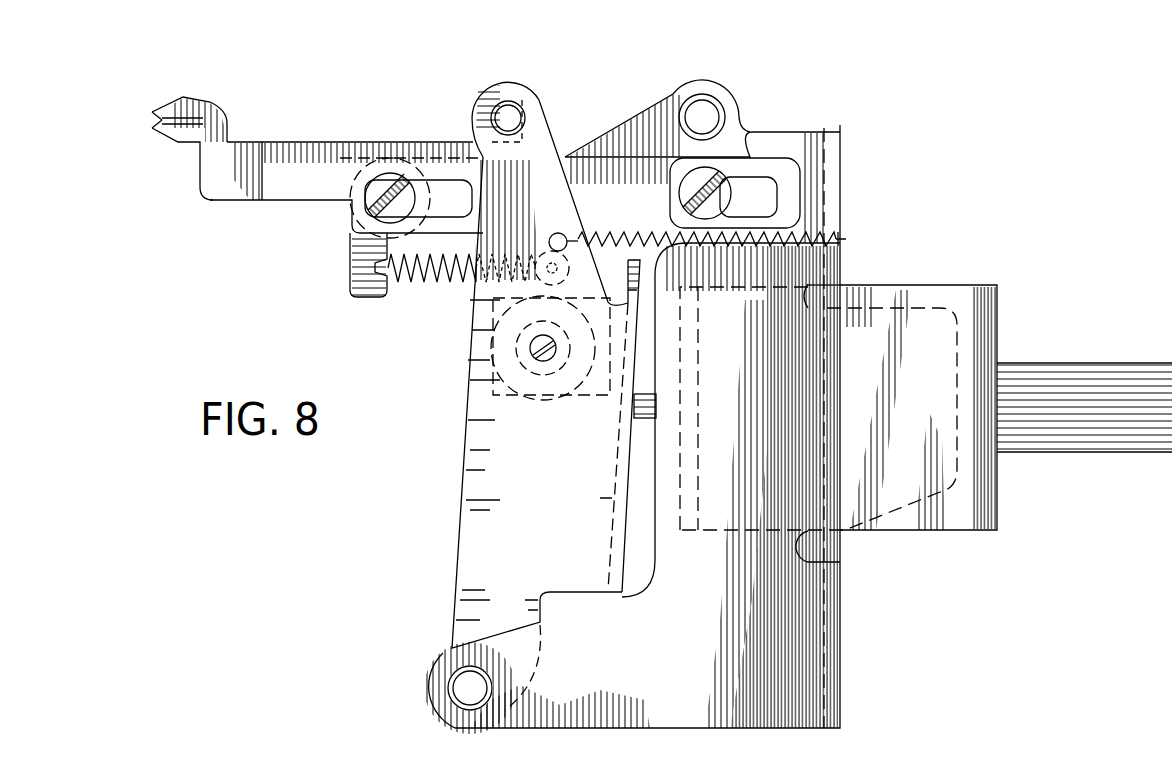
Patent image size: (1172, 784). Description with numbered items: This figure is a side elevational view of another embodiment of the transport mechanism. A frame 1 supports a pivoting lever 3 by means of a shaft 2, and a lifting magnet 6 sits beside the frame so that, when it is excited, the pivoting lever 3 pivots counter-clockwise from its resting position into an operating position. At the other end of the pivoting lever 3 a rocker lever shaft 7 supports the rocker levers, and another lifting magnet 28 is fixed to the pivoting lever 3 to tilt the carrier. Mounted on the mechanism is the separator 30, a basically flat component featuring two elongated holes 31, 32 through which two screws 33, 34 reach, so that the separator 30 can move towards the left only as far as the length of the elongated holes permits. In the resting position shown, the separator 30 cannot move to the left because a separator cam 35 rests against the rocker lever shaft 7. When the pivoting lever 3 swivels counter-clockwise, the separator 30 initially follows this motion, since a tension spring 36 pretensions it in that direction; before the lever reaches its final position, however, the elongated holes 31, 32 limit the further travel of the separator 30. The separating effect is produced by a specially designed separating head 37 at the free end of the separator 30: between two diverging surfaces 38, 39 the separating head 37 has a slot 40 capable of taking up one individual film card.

The frame 1 is at (803, 665).
The shaft 2 is at (460, 684).
The pivoting lever 3 is at (496, 488).
The lifting magnet 6 is at (976, 302).
The rocker lever shaft 7 is at (500, 118).
The lifting magnet 28 is at (520, 351).
The separator 30 is at (344, 131).
The elongated hole 31 is at (756, 193).
The elongated hole 32 is at (455, 202).
The screw 33 is at (690, 192).
The screw 34 is at (380, 200).
The separator cam 35 is at (542, 130).
The tension spring 36 is at (424, 286).
The separating head 37 is at (204, 107).
The diverging surface 38 is at (160, 106).
The diverging surface 39 is at (160, 138).
The slot 40 is at (150, 121).